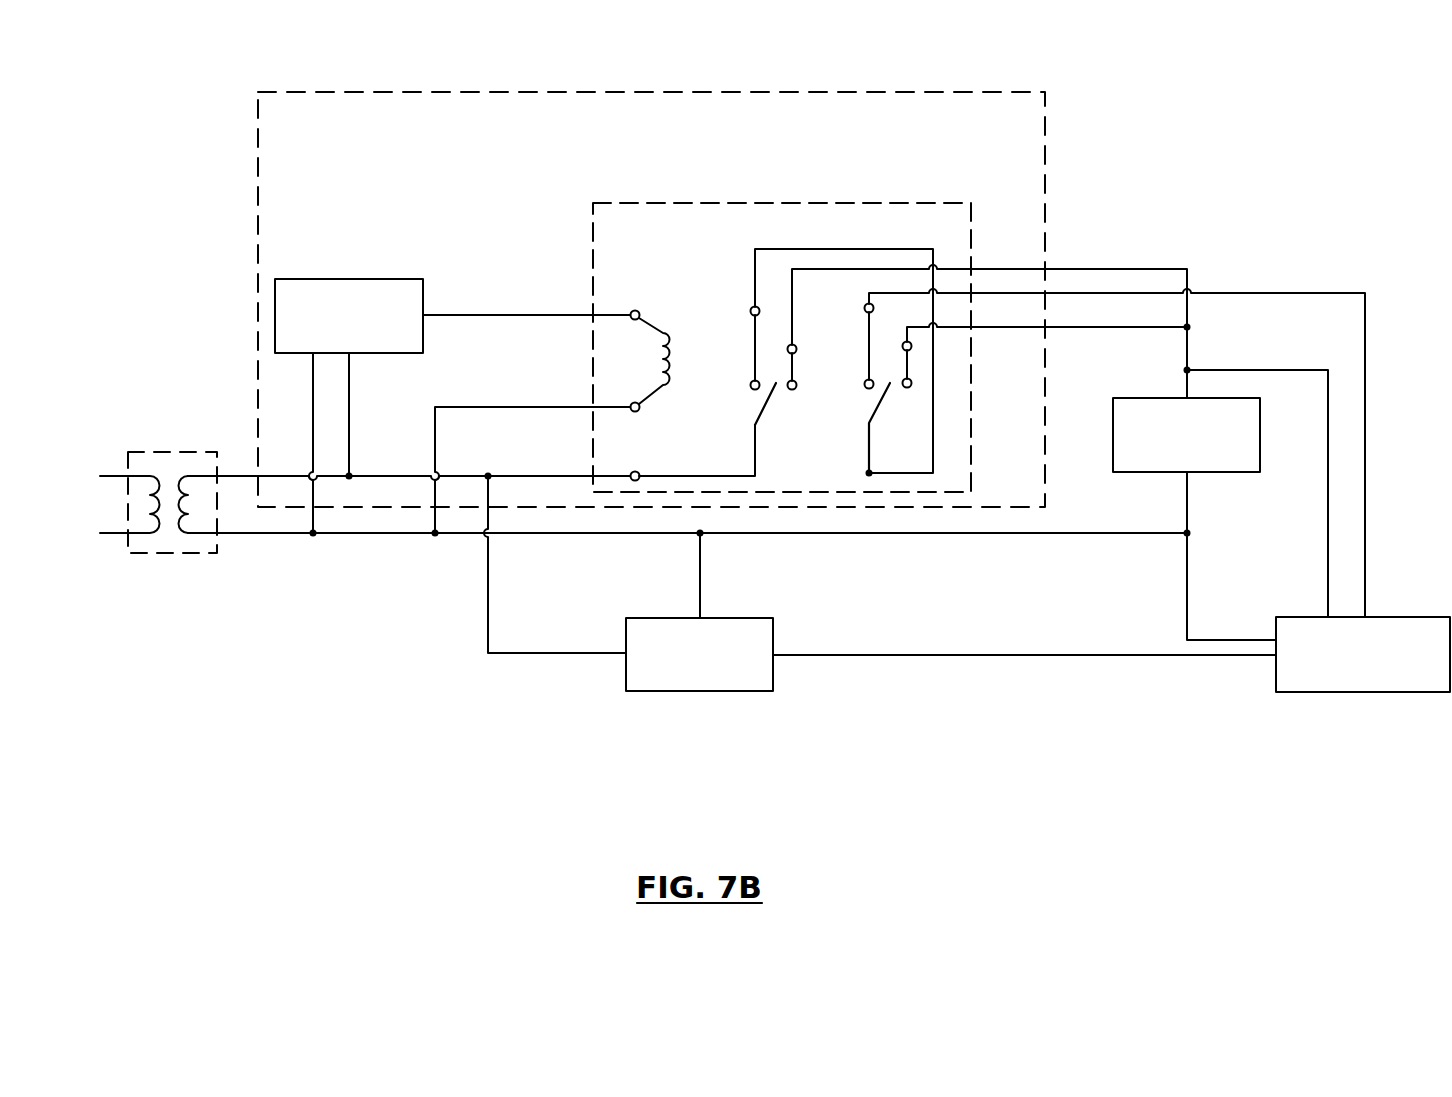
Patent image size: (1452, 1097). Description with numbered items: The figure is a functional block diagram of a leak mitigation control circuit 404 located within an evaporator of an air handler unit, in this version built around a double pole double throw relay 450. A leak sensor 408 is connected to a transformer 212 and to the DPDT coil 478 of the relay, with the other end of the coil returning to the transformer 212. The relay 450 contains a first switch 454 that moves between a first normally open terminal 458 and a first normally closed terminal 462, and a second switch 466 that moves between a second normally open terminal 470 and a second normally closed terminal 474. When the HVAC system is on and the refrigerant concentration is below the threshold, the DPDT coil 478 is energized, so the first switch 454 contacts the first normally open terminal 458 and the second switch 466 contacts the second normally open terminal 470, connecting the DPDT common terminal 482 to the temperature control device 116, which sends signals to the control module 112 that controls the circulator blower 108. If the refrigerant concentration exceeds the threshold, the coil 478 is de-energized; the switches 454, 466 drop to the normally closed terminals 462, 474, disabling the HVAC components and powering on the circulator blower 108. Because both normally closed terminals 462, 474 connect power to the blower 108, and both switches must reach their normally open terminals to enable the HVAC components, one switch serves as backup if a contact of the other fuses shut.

The leak mitigation control circuit 404 is at (517, 89).
The double pole double throw (DPDT) relay 450 is at (824, 200).
The leak sensor 408 is at (393, 263).
The transformer 212 is at (160, 450).
The first normally open terminal 458 is at (754, 304).
The first normally closed terminal 462 is at (787, 347).
The first switch 454 is at (762, 407).
The second normally open terminal 470 is at (866, 313).
The second normally closed terminal 474 is at (912, 349).
The second switch 466 is at (872, 410).
The DPDT coil 478 is at (666, 361).
The DPDT common terminal 482 is at (631, 473).
The circulator blower 108 is at (1154, 473).
The control module 112 is at (726, 617).
The temperature control device 116 is at (1327, 693).